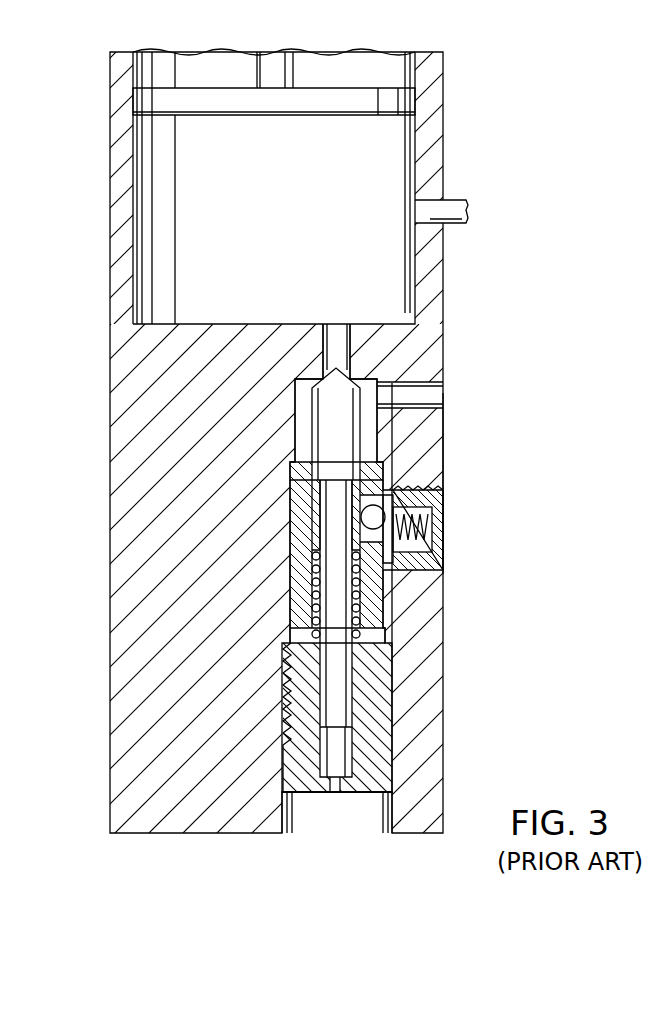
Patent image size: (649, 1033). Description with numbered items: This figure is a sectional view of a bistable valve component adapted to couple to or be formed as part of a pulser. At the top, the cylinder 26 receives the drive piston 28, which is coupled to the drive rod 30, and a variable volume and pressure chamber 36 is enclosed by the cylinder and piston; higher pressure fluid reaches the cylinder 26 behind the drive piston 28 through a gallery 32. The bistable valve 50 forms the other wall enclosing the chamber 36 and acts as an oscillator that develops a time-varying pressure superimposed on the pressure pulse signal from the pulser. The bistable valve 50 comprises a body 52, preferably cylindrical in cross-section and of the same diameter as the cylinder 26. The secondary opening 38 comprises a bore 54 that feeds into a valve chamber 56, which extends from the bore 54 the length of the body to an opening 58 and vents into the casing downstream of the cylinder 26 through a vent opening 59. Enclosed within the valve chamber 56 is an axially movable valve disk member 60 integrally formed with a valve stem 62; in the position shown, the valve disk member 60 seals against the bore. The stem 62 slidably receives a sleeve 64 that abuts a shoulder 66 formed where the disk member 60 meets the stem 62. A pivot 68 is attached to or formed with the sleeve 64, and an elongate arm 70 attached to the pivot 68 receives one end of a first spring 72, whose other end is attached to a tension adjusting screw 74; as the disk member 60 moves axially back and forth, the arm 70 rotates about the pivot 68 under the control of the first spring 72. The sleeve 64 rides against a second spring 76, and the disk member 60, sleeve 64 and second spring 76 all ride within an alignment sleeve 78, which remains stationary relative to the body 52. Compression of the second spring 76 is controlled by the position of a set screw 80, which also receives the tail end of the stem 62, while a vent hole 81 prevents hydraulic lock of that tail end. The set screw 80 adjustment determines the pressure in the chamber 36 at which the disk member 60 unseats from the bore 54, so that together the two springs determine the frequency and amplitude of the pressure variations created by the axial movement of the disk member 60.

The cylinder 26 is at (110, 200).
The drive piston 28 is at (415, 100).
The drive rod 30 is at (258, 67).
The gallery 32 is at (463, 200).
The chamber 36 is at (286, 226).
The secondary opening 38 is at (340, 325).
The bistable valve 50 is at (97, 526).
The body 52 is at (120, 797).
The bore 54 is at (345, 353).
The valve chamber 56 is at (370, 442).
The opening 58 is at (380, 810).
The vent opening 59 is at (432, 400).
The valve disk member 60 is at (347, 413).
The valve stem 62 is at (343, 690).
The sleeve 64 is at (333, 548).
The shoulder 66 is at (322, 493).
The pivot 68 is at (412, 505).
The elongate arm 70 is at (385, 508).
The first spring 72 is at (430, 540).
The tension adjusting screw 74 is at (443, 517).
The second spring 76 is at (313, 610).
The alignment sleeve 78 is at (300, 492).
The set screw 80 is at (300, 792).
The vent hole 81 is at (335, 792).